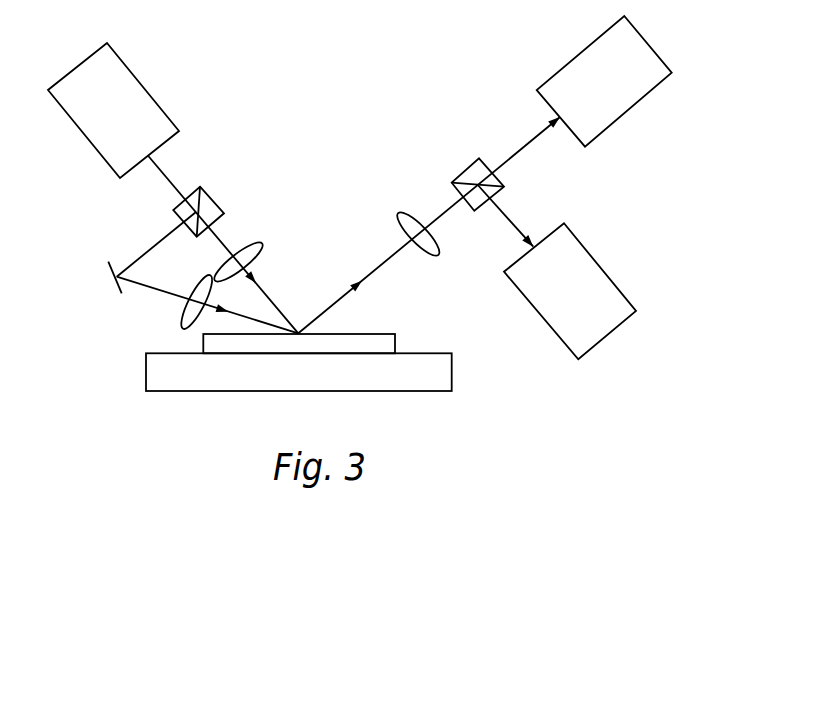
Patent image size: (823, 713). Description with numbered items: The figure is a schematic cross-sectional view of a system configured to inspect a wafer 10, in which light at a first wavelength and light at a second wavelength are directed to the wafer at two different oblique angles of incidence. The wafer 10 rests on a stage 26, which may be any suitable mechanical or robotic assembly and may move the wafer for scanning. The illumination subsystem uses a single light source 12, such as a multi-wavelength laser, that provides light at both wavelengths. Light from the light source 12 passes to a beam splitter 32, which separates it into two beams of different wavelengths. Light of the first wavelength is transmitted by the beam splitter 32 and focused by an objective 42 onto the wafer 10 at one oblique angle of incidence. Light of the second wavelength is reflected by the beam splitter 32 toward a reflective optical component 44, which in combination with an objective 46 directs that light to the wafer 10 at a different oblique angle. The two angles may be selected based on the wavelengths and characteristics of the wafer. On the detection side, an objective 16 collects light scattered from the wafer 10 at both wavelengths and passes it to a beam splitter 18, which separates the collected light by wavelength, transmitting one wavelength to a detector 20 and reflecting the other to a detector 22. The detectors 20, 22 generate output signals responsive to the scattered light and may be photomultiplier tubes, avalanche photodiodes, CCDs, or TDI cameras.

The wafer 10 is at (396, 336).
The light source 12 is at (157, 101).
The objective 16 is at (432, 252).
The beam splitter 18 is at (468, 168).
The detector 20 is at (647, 34).
The detector 22 is at (606, 271).
The stage 26 is at (452, 376).
The beam splitter 32 is at (217, 203).
The objective 42 is at (262, 248).
The reflective optical component 44 is at (106, 264).
The objective 46 is at (183, 322).